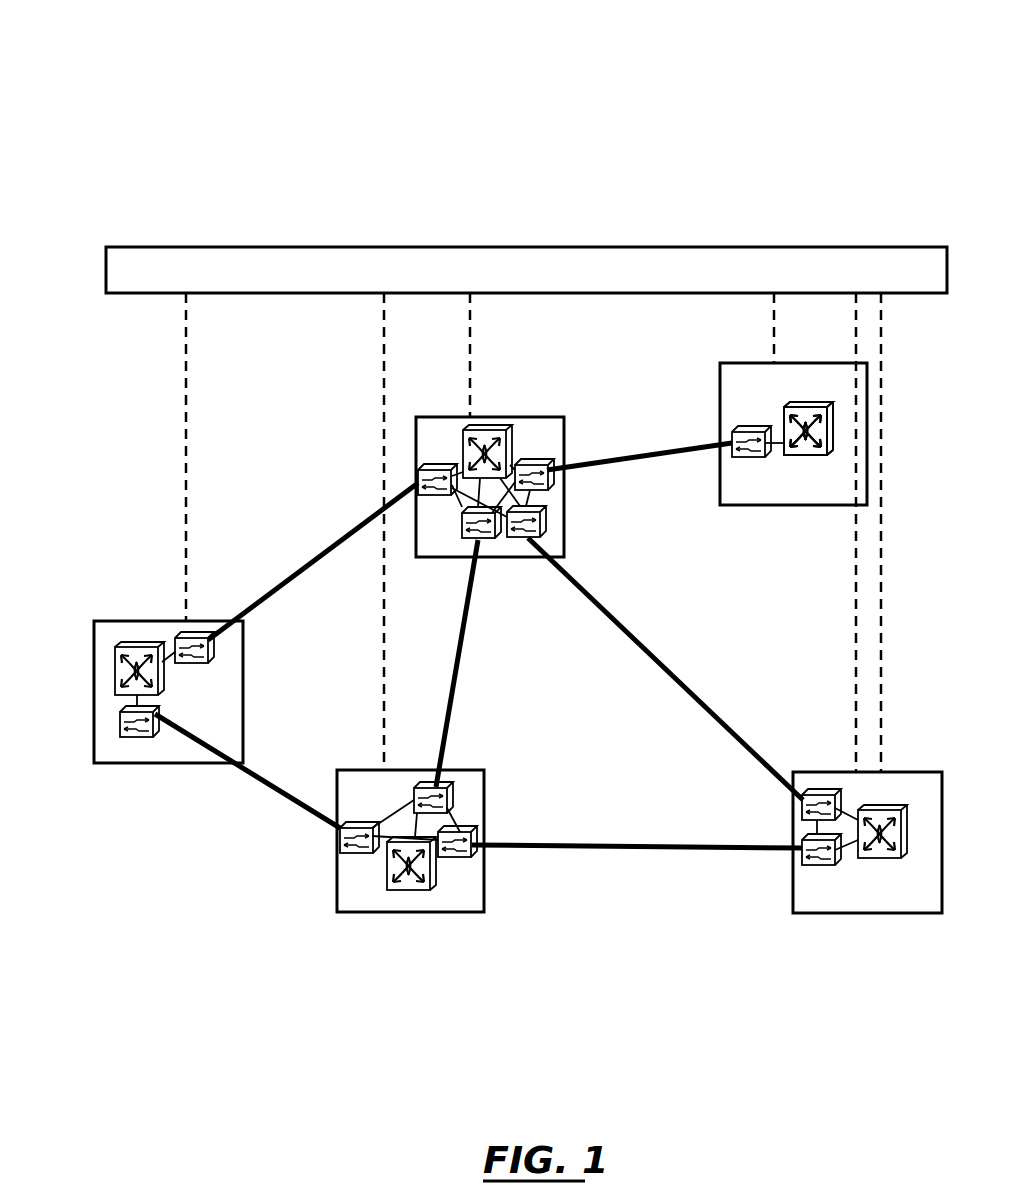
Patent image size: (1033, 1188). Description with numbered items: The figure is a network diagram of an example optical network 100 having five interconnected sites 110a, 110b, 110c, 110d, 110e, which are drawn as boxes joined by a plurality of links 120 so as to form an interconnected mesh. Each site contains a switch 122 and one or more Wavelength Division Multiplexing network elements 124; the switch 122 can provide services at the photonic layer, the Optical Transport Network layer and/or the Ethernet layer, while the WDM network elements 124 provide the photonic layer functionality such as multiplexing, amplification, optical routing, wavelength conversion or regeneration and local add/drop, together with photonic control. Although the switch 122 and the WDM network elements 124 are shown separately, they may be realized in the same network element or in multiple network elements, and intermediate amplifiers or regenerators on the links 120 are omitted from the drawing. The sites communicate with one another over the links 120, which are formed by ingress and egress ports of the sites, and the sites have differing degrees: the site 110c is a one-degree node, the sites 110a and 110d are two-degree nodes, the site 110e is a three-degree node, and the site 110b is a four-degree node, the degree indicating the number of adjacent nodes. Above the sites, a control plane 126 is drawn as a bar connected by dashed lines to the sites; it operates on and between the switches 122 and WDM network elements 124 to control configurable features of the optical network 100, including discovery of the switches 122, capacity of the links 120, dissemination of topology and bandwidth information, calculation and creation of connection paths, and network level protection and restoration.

The optical network 100 is at (606, 56).
The control plane 126 is at (684, 245).
The WDM network element 124 is at (752, 428).
The switch 122 is at (813, 403).
The link 120 is at (310, 570).
The site 110a is at (94, 730).
The site 110b is at (527, 415).
The site 110c is at (809, 442).
The site 110d is at (840, 915).
The site 110e is at (335, 892).